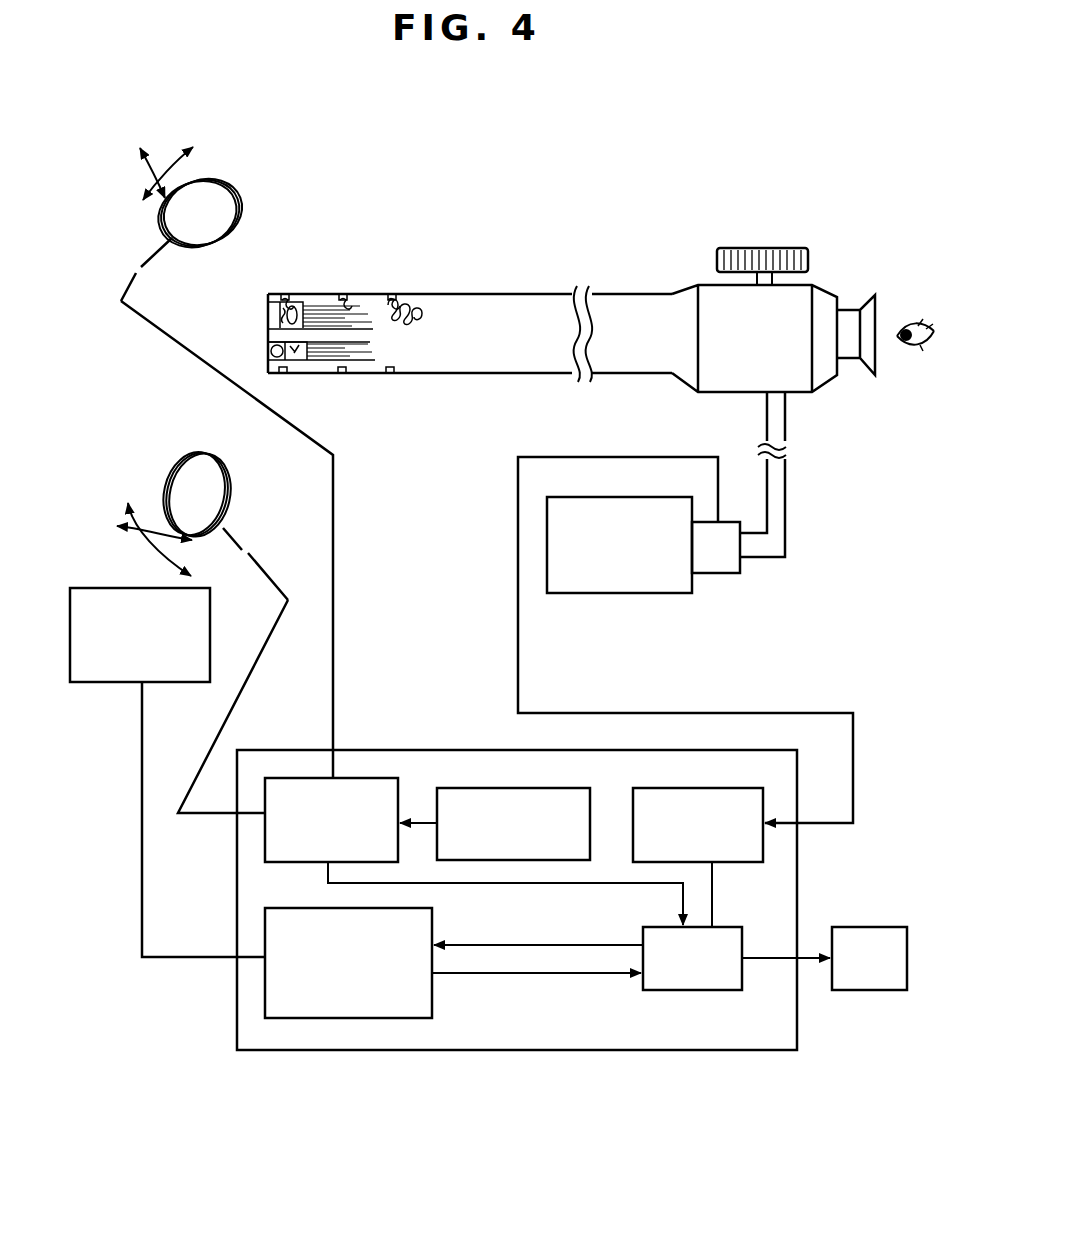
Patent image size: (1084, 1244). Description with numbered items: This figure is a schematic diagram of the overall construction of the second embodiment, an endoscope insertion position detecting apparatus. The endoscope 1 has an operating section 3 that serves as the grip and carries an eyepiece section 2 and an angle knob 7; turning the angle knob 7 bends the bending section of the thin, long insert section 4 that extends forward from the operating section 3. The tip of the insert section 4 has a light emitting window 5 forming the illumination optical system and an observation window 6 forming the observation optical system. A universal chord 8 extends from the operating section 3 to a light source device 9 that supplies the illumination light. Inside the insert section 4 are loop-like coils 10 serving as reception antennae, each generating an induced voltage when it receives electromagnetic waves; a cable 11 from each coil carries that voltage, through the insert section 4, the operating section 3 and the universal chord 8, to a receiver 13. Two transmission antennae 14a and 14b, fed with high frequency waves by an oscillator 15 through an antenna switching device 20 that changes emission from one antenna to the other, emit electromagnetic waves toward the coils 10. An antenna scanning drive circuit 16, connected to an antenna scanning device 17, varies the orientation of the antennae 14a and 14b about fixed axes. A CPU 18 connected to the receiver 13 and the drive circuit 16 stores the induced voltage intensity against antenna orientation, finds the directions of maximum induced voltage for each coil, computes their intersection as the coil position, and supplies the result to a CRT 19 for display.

The endoscope 1 is at (622, 274).
The eyepiece section 2 is at (876, 306).
The operating section 3 is at (718, 294).
The insert section 4 is at (452, 376).
The light emitting window 5 is at (270, 350).
The observation window 6 is at (270, 313).
The angle knob 7 is at (768, 248).
The universal chord 8 is at (792, 424).
The light source device 9 is at (672, 596).
The coils 10 is at (390, 296).
The cable 11 is at (420, 300).
The receiver 13 is at (741, 774).
The transmission antenna 14a is at (238, 192).
The transmission antenna 14b is at (232, 470).
The oscillator 15 is at (483, 788).
The antenna scanning drive circuit 16 is at (432, 997).
The antenna scanning device 17 is at (106, 685).
The CPU 18 is at (736, 927).
The CRT 19 is at (868, 927).
The antenna switching device 20 is at (367, 778).